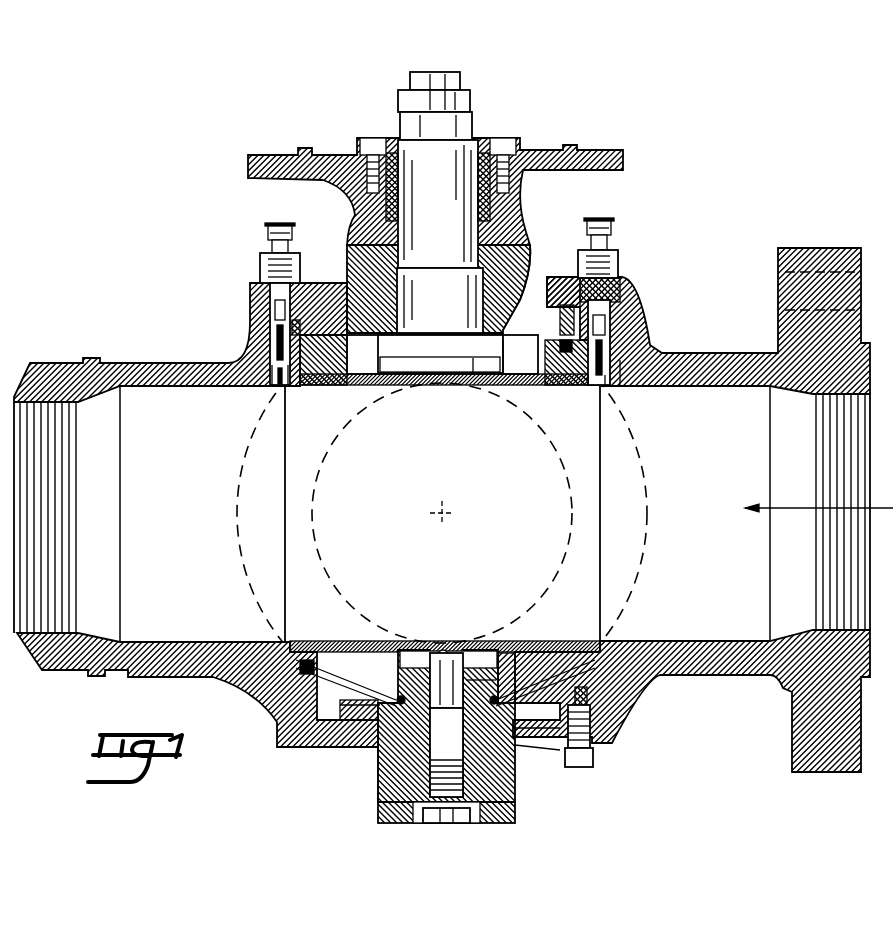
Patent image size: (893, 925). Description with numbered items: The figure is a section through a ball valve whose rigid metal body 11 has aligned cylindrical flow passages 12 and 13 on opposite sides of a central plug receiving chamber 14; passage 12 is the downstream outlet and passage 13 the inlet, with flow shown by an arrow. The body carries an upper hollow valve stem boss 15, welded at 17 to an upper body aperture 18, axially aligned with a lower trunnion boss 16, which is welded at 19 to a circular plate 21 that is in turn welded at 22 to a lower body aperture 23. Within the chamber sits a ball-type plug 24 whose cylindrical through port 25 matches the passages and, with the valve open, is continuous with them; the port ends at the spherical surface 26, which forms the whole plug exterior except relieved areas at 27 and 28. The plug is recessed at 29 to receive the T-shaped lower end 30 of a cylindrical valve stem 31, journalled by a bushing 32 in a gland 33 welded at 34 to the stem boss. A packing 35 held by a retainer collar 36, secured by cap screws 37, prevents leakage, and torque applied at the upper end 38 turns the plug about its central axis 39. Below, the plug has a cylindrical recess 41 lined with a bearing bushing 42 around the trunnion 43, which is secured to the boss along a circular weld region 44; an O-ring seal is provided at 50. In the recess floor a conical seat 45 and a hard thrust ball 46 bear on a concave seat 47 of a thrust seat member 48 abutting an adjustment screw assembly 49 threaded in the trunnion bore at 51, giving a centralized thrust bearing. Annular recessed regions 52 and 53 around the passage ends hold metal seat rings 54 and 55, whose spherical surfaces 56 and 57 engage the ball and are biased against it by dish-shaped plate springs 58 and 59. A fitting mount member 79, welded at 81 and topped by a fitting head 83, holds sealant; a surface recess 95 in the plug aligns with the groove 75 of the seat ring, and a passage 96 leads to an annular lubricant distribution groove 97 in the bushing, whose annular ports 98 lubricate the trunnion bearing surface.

The valve body 11 is at (630, 322).
The flow passage 12 is at (172, 390).
The flow passage 13 is at (668, 386).
The plug receiving chamber 14 is at (442, 513).
The valve stem boss 15 is at (347, 265).
The trunnion boss 16 is at (502, 782).
The weld 17 is at (550, 282).
The upper body aperture 18 is at (533, 278).
The weld 19 is at (520, 750).
The circular plate 21 is at (548, 712).
The weld 22 is at (568, 755).
The lower body aperture 23 is at (345, 747).
The ball-type plug 24 is at (328, 386).
The through port 25 is at (365, 386).
The spherical surface 26 is at (308, 343).
The top relieved area 27 is at (567, 352).
The bottom relieved area 28 is at (345, 700).
The recess 29 is at (503, 345).
The T-shaped rectangular lower end 30 is at (473, 372).
The valve stem 31 is at (434, 224).
The bushing 32 is at (400, 294).
The gland 33 is at (512, 206).
The weld 34 is at (531, 248).
The packing 35 is at (398, 180).
The retainer collar 36 is at (482, 134).
The cap screws 37 is at (506, 142).
The upper end of valve stem 38 is at (470, 100).
The central axis 39 is at (449, 509).
The cylindrical recess 41 is at (534, 655).
The bearing bushing 42 is at (500, 648).
The trunnion 43 is at (378, 760).
The circular weld region 44 is at (392, 823).
The conical seat 45 is at (432, 650).
The thrust ball 46 is at (446, 650).
The concave seat 47 is at (456, 680).
The thrust seat member 48 is at (448, 666).
The adjustment screw assembly unit 49 is at (450, 823).
The O-ring seal 50 is at (370, 705).
The threaded central bore 51 is at (430, 778).
The recessed region 52 is at (252, 386).
The recessed region 53 is at (630, 386).
The downstream seat ring 54 is at (262, 386).
The upstream seat ring 55 is at (605, 386).
The spherical surface 56 is at (288, 386).
The spherical surface 57 is at (588, 386).
The plate spring 58 is at (305, 325).
The plate spring 59 is at (574, 328).
The groove 75 is at (572, 386).
The fitting mount member 79 is at (260, 262).
The weld 81 is at (620, 282).
The fitting head 83 is at (266, 234).
The surface recess 95 is at (316, 641).
The passage 96 is at (356, 641).
The lubricant distribution groove 97 is at (447, 700).
The annular ports 98 is at (481, 685).